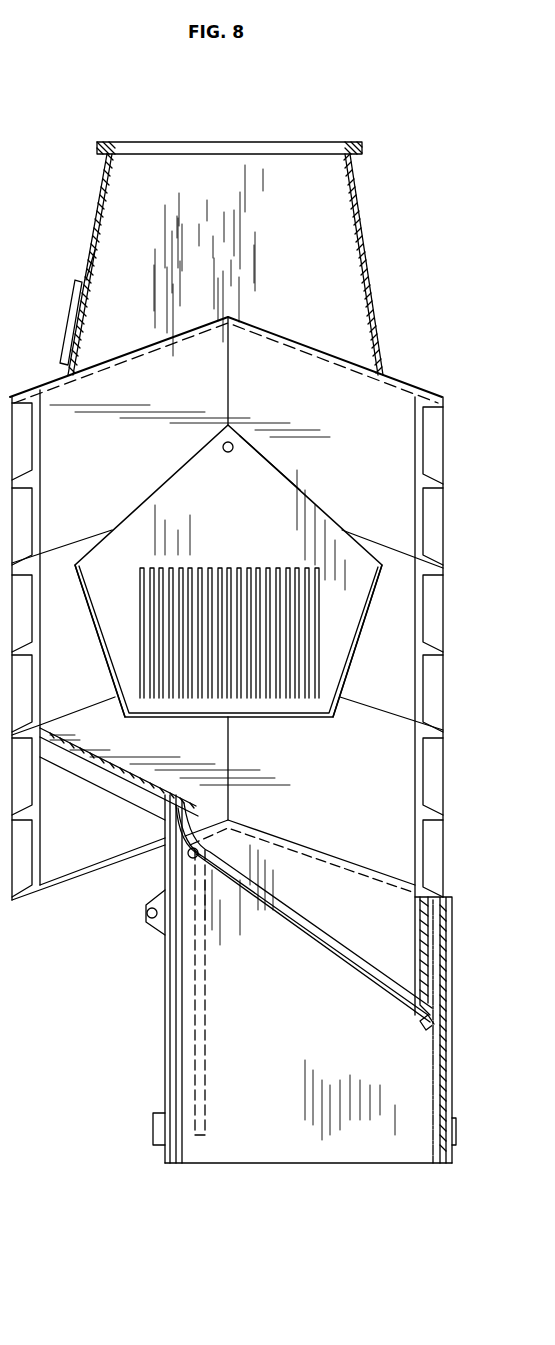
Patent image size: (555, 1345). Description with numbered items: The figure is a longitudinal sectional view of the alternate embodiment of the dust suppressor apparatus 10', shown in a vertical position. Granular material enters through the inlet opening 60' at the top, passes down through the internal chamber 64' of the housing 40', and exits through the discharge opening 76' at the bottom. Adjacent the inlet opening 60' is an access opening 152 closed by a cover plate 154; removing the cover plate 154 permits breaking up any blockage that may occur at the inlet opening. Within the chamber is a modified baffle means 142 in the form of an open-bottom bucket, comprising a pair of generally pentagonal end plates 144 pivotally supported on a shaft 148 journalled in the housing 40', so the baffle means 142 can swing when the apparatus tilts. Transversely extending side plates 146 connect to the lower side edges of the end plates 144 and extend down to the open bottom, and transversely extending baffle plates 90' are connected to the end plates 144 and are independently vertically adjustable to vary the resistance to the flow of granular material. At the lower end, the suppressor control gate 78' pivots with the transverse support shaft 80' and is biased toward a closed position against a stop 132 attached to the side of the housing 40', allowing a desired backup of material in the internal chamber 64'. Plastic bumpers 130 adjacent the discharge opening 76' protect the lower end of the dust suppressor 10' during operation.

The inlet opening 60' is at (225, 232).
The access opening 152 is at (82, 268).
The cover plate 154 is at (68, 309).
The housing 40' is at (231, 666).
The baffle means 142 is at (328, 502).
The end plates 144 is at (278, 470).
The shaft 148 is at (233, 445).
The baffle plates 90' is at (229, 599).
The side plates 146 is at (378, 668).
The internal chamber 64' is at (278, 768).
The transverse support shaft 80' is at (156, 945).
The suppressor control gate 78' is at (305, 912).
The stop 132 is at (420, 1020).
The discharge opening 76' is at (310, 1052).
The plastic bumpers 130 is at (153, 1130).
The dust suppressor apparatus 10' is at (81, 1031).